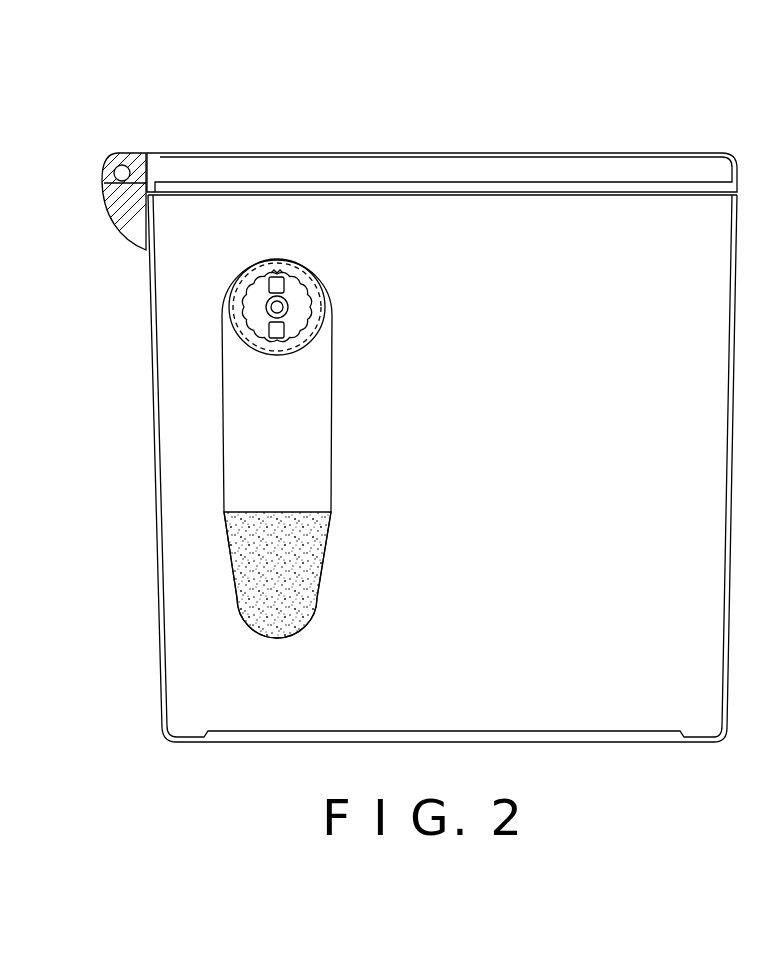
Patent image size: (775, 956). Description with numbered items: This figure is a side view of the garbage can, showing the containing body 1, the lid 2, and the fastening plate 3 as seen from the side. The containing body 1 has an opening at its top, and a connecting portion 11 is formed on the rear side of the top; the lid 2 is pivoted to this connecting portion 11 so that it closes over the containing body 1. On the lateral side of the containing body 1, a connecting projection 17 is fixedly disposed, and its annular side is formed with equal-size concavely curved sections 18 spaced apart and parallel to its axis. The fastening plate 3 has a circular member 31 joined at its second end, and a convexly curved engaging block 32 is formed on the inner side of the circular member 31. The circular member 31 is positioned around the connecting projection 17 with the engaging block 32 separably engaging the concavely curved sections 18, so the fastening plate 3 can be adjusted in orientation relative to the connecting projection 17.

The containing body 1 is at (703, 273).
The lid 2 is at (500, 157).
The fastening plate 3 is at (320, 448).
The connecting portion 11 is at (120, 232).
The connecting projection 17 is at (253, 308).
The concavely curved sections 18 is at (254, 283).
The circular member 31 is at (322, 288).
The engaging block 32 is at (277, 272).